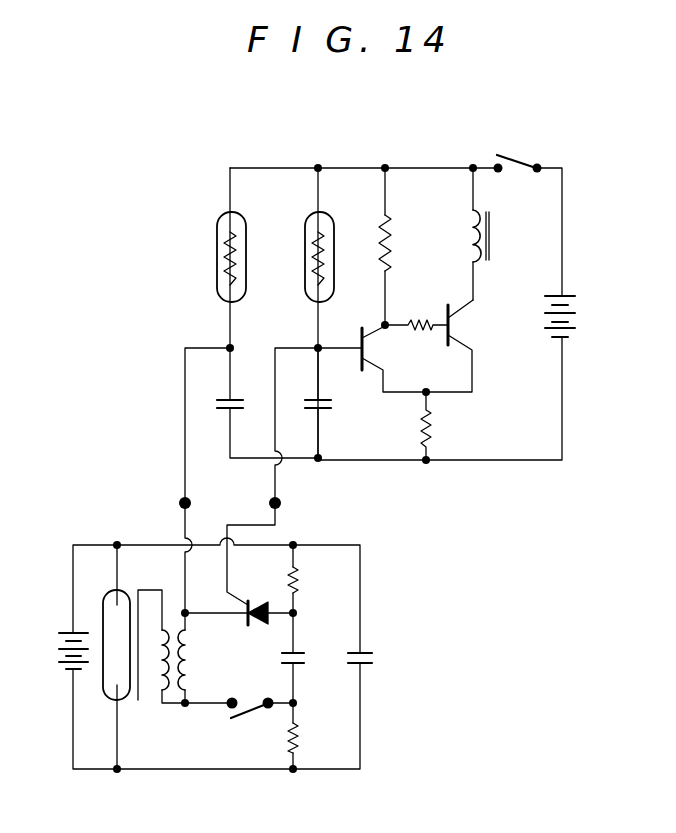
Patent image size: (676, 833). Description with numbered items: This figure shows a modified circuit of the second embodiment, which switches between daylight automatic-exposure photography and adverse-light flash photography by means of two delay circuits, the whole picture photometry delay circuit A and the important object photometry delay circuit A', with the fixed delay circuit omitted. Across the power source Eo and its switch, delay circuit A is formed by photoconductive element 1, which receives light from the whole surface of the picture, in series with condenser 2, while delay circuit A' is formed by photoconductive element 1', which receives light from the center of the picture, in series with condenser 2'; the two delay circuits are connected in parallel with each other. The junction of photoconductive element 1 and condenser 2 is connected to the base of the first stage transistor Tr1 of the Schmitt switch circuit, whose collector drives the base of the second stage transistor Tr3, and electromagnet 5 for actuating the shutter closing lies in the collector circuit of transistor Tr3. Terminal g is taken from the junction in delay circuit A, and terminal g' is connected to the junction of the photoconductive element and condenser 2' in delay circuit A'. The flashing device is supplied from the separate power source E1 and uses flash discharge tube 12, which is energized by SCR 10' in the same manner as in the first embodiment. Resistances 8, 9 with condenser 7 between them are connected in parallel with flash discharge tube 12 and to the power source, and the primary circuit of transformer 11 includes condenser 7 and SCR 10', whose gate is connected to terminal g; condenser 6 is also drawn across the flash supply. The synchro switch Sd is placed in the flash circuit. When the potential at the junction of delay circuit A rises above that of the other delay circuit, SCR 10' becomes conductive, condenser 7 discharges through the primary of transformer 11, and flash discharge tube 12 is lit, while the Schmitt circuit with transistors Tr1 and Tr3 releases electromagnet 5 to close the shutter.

The photoconductive element 1' is at (214, 242).
The photoconductive element 1 is at (335, 242).
The condenser 2' is at (234, 419).
The condenser 2 is at (320, 419).
The electromagnet 5 is at (488, 236).
The capacitor 6 is at (362, 672).
The condenser 7 is at (296, 672).
The resistance 8 is at (301, 580).
The resistance 9 is at (300, 738).
The SCR 10' is at (254, 634).
The transformer 11 is at (186, 686).
The flash discharge tube 12 is at (124, 698).
The first stage transistor Tr1 is at (394, 359).
The second stage transistor Tr3 is at (464, 346).
The power source Eo is at (573, 316).
The power source E1 is at (57, 651).
The synchro switch Sd is at (250, 724).
The terminal g is at (287, 490).
The terminal g' is at (174, 490).
The whole picture photometry delay circuit A is at (290, 315).
The important object photometry delay circuit A' is at (199, 315).